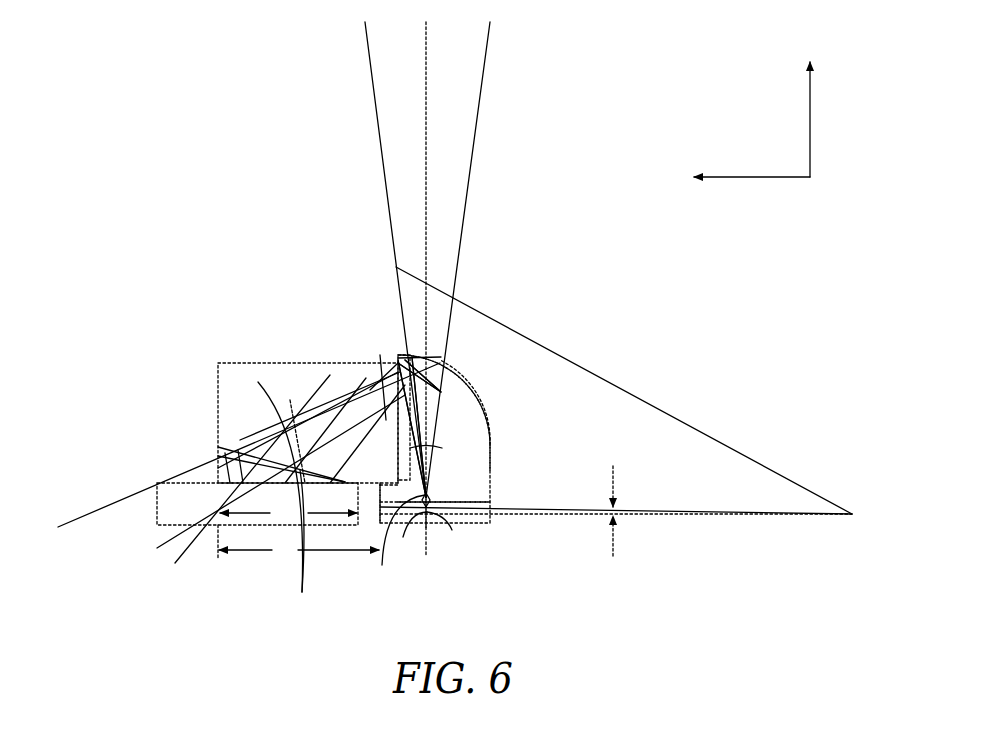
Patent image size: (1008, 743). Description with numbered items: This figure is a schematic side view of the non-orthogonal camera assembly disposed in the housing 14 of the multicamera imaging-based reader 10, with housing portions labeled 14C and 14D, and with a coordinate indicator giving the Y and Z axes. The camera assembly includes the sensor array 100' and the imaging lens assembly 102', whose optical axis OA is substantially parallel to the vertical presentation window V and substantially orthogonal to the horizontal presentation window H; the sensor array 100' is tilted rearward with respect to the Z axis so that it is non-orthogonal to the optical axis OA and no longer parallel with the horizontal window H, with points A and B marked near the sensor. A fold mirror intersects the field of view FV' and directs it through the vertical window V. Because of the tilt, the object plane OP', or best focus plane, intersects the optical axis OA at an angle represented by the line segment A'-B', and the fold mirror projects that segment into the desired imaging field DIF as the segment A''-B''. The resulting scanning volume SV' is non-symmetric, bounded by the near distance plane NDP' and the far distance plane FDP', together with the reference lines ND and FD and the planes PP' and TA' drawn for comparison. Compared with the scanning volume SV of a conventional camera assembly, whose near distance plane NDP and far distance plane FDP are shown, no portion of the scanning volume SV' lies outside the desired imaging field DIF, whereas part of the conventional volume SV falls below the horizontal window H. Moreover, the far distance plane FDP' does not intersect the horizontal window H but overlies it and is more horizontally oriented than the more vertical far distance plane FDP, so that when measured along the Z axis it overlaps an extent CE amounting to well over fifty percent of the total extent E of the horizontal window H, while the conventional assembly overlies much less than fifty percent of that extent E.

The optical axis OA is at (427, 30).
The object plane segment end point B' is at (386, 259).
The object plane segment end point A' is at (466, 259).
The object plane OP' is at (624, 390).
The plane PP' is at (616, 491).
The thickness TA' is at (610, 525).
The lens portion 14D is at (479, 460).
The optical system 10 is at (522, 410).
The lens element 14 is at (493, 437).
The desired imaging field DIF is at (216, 376).
The projected segment end point A'' is at (420, 420).
The lens portion 14C is at (160, 519).
The overlapped extent CE is at (288, 503).
The extent of horizontal window E is at (298, 541).
The scanning volume SV' is at (249, 445).
The far distance plane FDP' is at (281, 475).
The focal arc FD is at (286, 412).
The far distance plane FDP is at (300, 543).
The scanning volume SV is at (329, 427).
The horizontal presentation window H is at (240, 452).
The projected segment end point B'' is at (281, 398).
The line ND is at (380, 355).
The point NDP is at (351, 365).
The near distance plane NDP' is at (459, 360).
The field of view FV' is at (435, 427).
The vertical presentation window V is at (424, 449).
The arc A is at (411, 534).
The arc B is at (445, 533).
The imaging lens assembly 102' is at (394, 541).
The sensor array 100' is at (426, 533).
The Y axis Y is at (808, 108).
The z axis Z is at (742, 177).